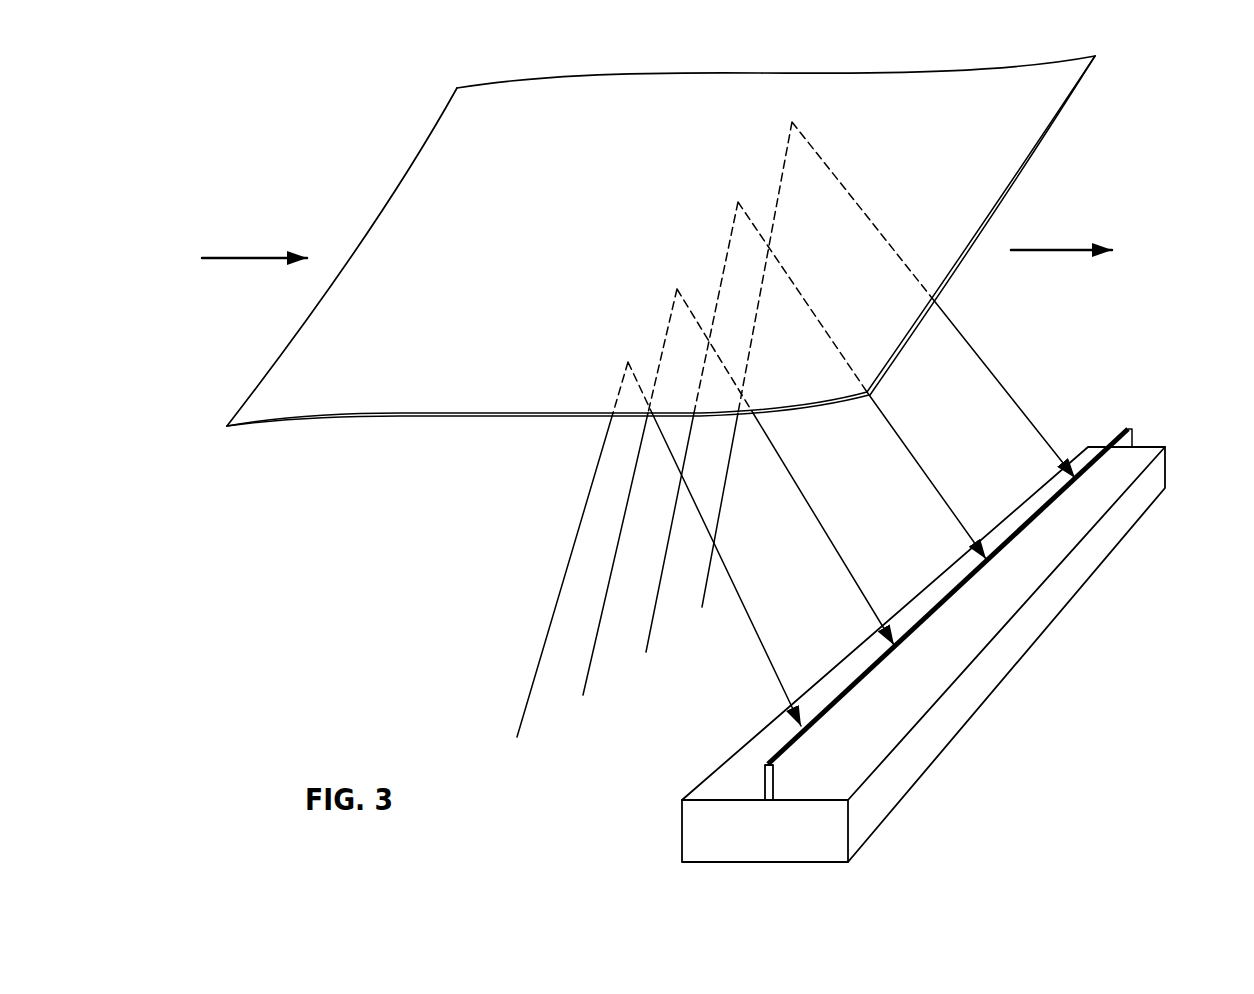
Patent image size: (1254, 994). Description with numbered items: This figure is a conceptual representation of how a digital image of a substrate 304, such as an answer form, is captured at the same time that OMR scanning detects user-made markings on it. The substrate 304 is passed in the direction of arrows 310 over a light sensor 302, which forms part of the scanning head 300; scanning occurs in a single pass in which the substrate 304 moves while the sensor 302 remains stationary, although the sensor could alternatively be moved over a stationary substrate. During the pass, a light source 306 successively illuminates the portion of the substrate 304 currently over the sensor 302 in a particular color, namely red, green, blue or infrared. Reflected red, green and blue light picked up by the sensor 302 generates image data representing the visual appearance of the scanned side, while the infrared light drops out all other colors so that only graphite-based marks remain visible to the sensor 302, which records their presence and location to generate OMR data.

The read head 300 is at (1059, 600).
The light sensor 302 is at (1128, 429).
The substrate 304 is at (460, 122).
The light source 306 is at (731, 635).
The arrows 310 is at (263, 255).